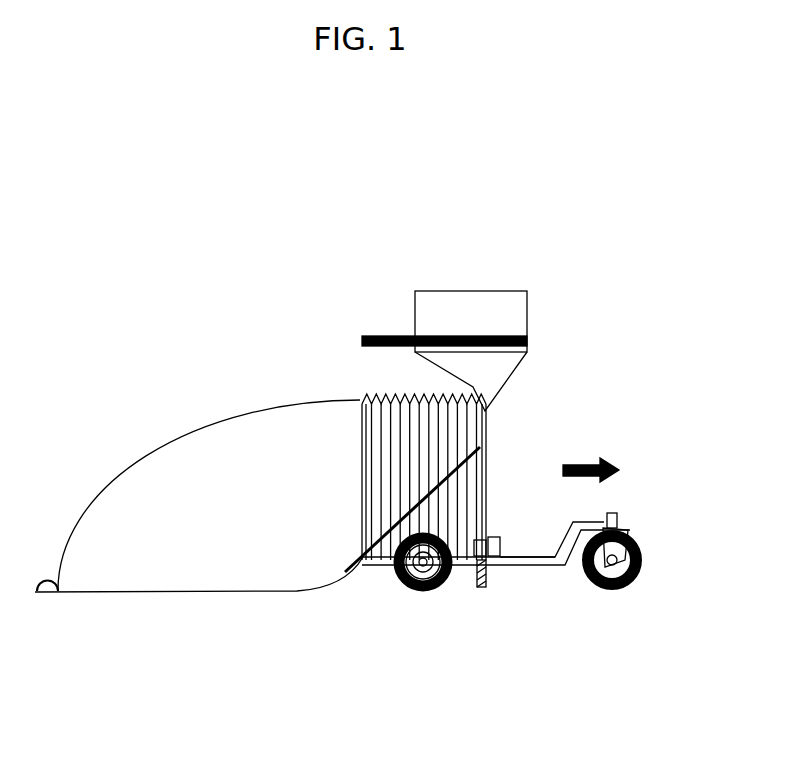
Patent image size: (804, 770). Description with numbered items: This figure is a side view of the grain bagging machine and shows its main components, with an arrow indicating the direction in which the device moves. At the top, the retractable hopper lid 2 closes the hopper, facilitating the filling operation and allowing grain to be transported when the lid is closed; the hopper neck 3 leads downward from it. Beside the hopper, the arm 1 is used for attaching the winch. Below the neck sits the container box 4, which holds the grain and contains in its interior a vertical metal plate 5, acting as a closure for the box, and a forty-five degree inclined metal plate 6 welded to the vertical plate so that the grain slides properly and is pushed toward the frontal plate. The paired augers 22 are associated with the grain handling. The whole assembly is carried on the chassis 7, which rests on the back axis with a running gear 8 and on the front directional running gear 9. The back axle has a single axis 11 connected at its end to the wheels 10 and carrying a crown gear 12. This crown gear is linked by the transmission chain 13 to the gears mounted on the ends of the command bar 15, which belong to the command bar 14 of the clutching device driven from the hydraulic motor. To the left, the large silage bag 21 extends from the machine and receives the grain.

The arm 1 is at (377, 338).
The retractable hopper lid 2 is at (460, 295).
The hopper neck 3 is at (507, 375).
The container box 4 is at (390, 387).
The vertical metal plate 5 is at (477, 448).
The 45° inclined metal plate 6 is at (363, 483).
The chassis 7 is at (466, 566).
The back axis with a running gear 8 is at (372, 563).
The front directional running gear 9 is at (612, 522).
The wheels 10 is at (413, 590).
The single axis 11 is at (422, 588).
The crown gear 12 is at (435, 580).
The transmission chain 13 is at (486, 572).
The command bar 14 is at (498, 533).
The gears mounted on the ends of the command bar 15 is at (512, 558).
The silage bag 21 is at (163, 452).
The paired augers 22 is at (386, 427).